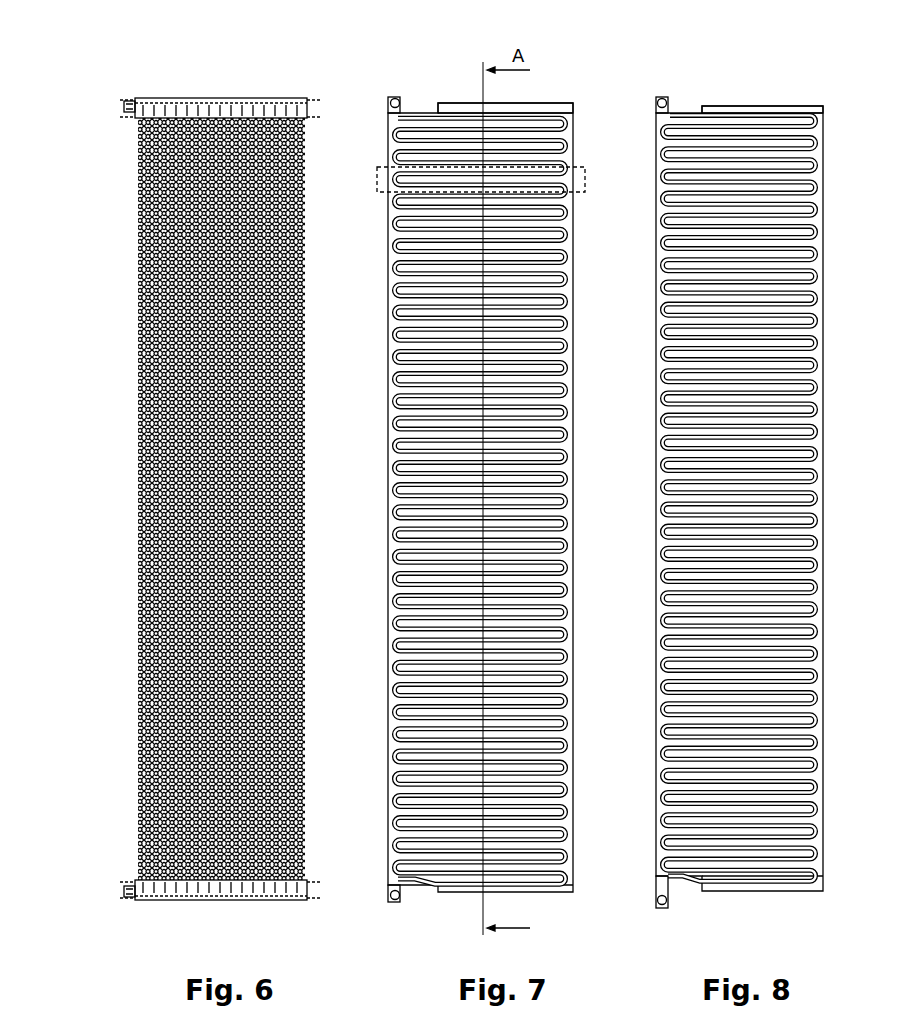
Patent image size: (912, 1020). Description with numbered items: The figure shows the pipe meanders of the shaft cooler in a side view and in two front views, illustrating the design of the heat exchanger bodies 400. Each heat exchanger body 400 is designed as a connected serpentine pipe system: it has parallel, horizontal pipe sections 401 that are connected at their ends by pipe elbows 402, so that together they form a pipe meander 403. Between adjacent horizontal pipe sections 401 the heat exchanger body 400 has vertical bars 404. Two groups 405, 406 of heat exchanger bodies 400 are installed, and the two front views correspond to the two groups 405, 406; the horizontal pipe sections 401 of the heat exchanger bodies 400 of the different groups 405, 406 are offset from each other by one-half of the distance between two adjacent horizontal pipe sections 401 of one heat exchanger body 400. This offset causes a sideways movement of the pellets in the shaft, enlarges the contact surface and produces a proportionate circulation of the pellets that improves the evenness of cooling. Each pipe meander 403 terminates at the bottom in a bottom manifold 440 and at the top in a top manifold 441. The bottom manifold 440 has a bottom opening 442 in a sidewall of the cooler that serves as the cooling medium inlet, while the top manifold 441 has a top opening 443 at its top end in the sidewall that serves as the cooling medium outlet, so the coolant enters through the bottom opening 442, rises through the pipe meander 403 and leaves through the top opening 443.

In FIG. 7, the heat exchanger body 400 is at (387, 305).
In FIG. 8, the heat exchanger body 400 is at (657, 222).
In FIG. 7, the horizontal pipe section 401 is at (458, 118).
In FIG. 8, the horizontal pipe section 401 is at (730, 116).
In FIG. 7, the pipe elbow 402 is at (566, 128).
In FIG. 8, the pipe elbow 402 is at (818, 115).
In FIG. 7, the pipe meander 403 is at (392, 175).
In FIG. 8, the pipe meander 403 is at (665, 150).
In FIG. 6, the vertical bar 404 is at (307, 248).
In FIG. 7, the vertical bar 404 is at (395, 285).
In FIG. 8, the vertical bar 404 is at (812, 150).
In FIG. 7, the first group of heat exchanger bodies 405 is at (548, 112).
In FIG. 8, the second group of heat exchanger bodies 406 is at (800, 113).
In FIG. 6, the bottom manifold 440 is at (210, 900).
In FIG. 7, the bottom manifold 440 is at (396, 905).
In FIG. 8, the bottom manifold 440 is at (668, 908).
In FIG. 6, the top manifold 441 is at (200, 105).
In FIG. 7, the top manifold 441 is at (395, 98).
In FIG. 8, the top manifold 441 is at (665, 98).
In FIG. 6, the bottom opening 442 is at (124, 892).
In FIG. 7, the bottom opening 442 is at (388, 898).
In FIG. 8, the bottom opening 442 is at (657, 899).
In FIG. 6, the top opening 443 is at (124, 105).
In FIG. 7, the top opening 443 is at (390, 100).
In FIG. 8, the top opening 443 is at (660, 100).